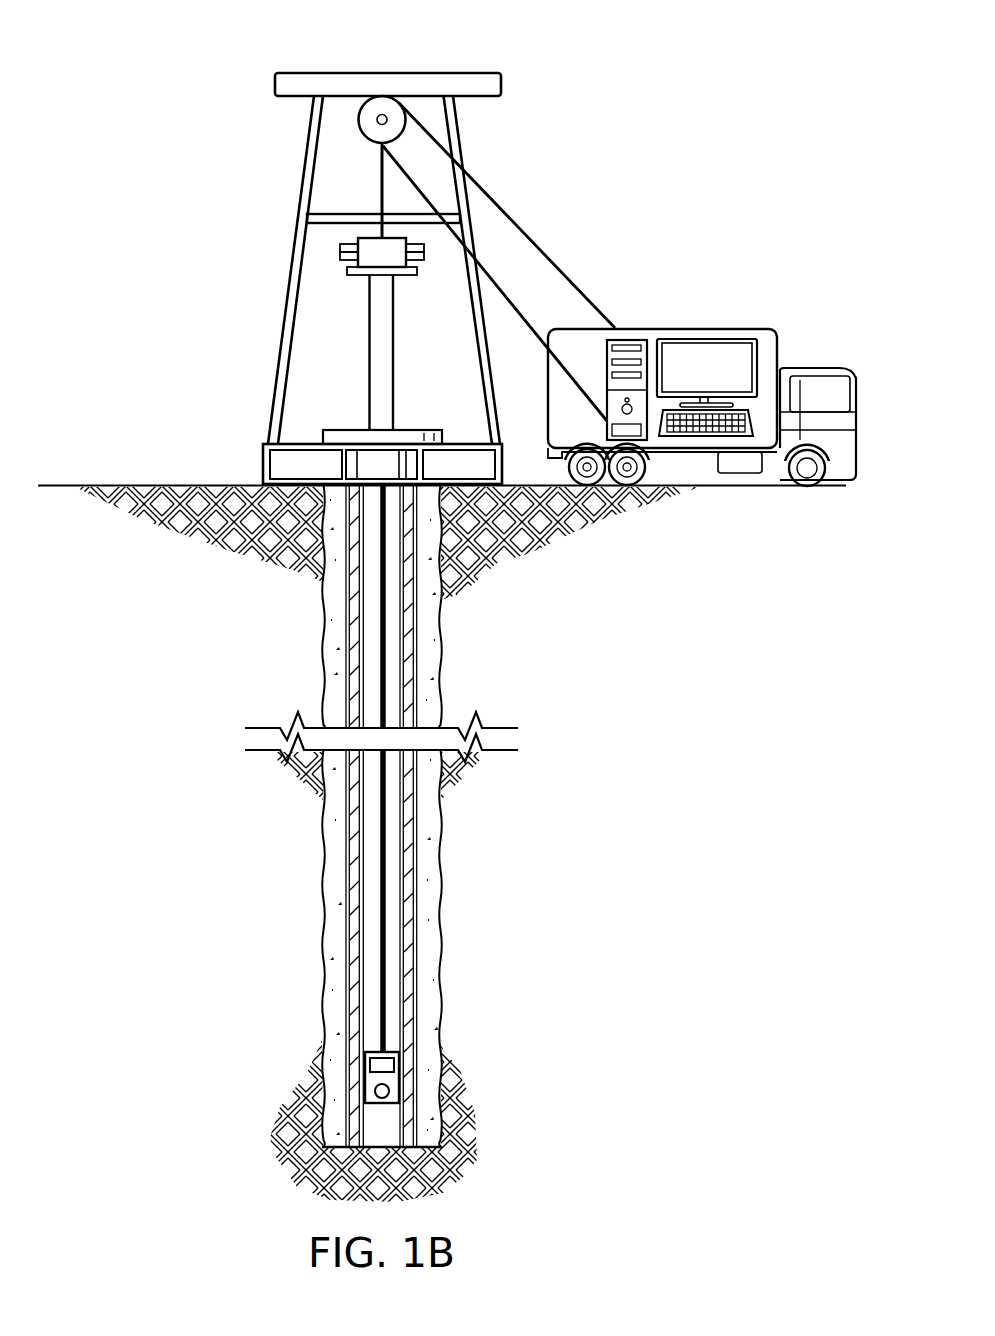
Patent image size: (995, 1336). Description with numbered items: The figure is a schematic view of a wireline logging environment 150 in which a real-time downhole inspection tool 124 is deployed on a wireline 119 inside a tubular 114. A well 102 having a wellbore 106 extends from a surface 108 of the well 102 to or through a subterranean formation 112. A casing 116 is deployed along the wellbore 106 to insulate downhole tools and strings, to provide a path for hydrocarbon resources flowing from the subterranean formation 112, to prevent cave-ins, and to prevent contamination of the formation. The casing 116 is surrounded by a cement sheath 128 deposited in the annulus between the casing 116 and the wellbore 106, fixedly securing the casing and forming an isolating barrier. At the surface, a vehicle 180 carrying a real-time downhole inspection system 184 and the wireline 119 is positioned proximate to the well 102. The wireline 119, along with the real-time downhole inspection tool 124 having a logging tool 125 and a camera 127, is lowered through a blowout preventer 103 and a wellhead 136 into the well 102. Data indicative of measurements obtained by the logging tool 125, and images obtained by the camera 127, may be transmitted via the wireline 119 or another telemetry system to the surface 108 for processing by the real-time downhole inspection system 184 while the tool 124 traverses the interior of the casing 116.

The wireline logging environment 150 is at (150, 56).
The wireline 119 is at (379, 186).
The blowout preventer 103 is at (368, 357).
The wellhead 136 is at (348, 430).
The well 102 is at (410, 420).
The surface 108 is at (83, 486).
The real-time downhole inspection system 184 is at (626, 340).
The vehicle 180 is at (696, 329).
The wellbore 106 is at (437, 903).
The cement sheath 128 is at (434, 935).
The casing 116 is at (417, 1005).
The tubular 114 is at (358, 913).
The subterranean formation 112 is at (665, 997).
The real-time downhole inspection tool 124 is at (365, 1098).
The logging tool 125 is at (371, 1063).
The camera 127 is at (375, 1091).